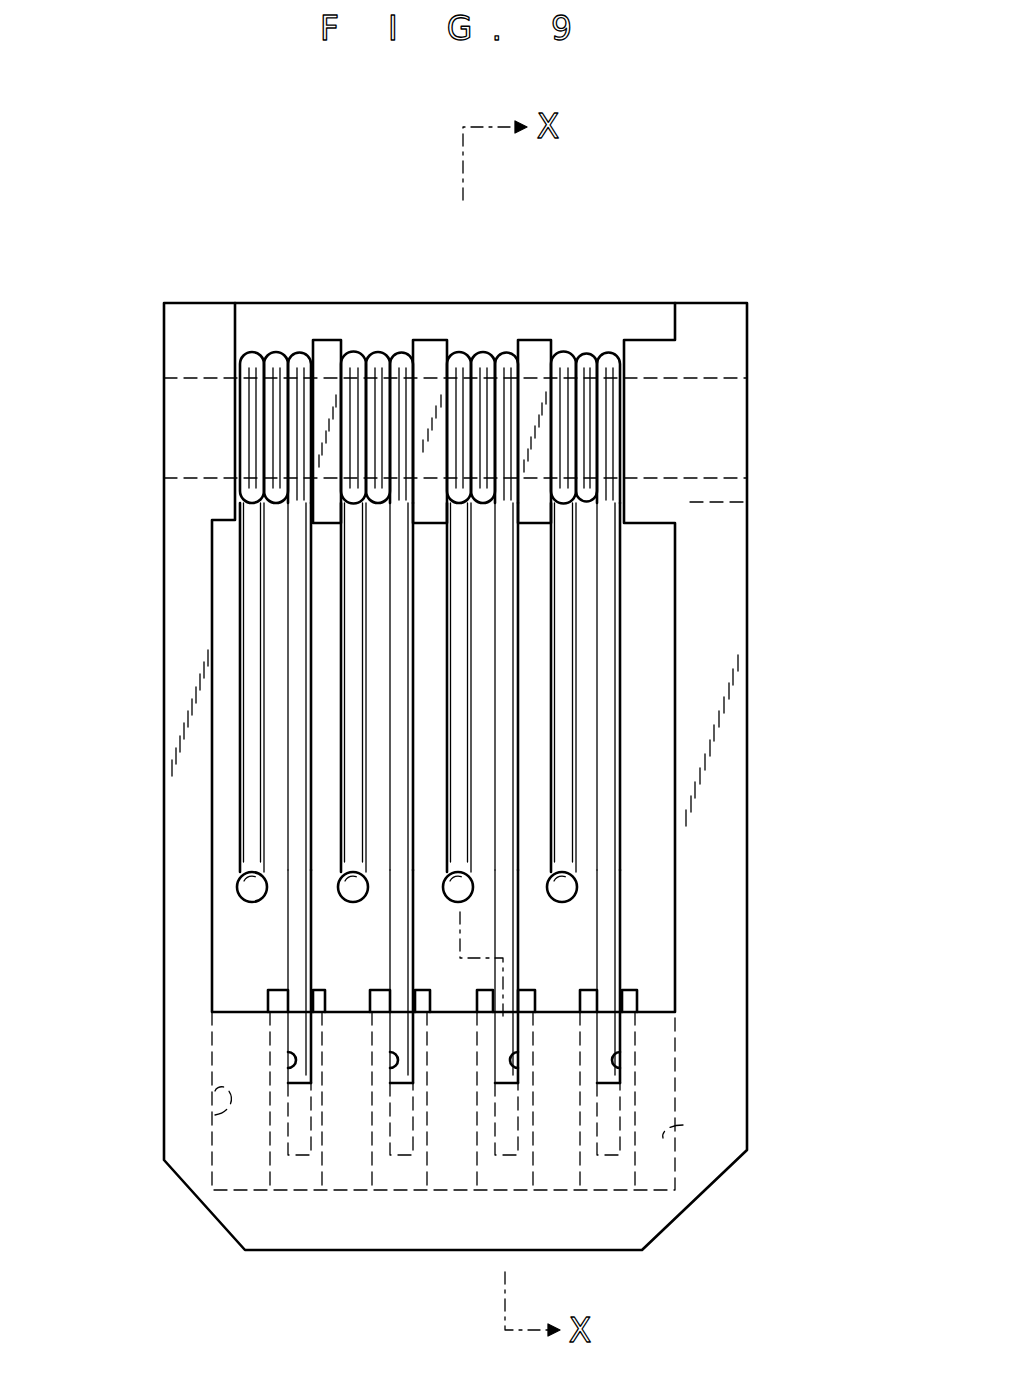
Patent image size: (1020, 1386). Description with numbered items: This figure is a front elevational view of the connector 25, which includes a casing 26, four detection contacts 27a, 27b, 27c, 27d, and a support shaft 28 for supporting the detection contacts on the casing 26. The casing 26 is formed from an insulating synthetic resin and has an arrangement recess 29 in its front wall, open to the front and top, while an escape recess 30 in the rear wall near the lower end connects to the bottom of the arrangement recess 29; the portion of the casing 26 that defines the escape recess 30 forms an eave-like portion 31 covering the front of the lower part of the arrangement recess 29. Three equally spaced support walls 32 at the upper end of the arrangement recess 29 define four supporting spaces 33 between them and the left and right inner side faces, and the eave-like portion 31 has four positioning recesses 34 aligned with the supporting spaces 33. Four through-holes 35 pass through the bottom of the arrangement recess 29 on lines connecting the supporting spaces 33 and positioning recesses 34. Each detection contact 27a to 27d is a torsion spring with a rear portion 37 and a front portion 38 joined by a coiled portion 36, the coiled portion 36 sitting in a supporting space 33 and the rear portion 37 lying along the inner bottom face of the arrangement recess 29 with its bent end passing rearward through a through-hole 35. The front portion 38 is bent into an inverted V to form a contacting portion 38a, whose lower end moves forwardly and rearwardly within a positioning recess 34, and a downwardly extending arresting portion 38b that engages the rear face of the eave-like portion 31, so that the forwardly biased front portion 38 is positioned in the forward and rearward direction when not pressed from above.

The connector 25 is at (730, 243).
The casing 26 is at (748, 689).
The detection contact 27a is at (290, 855).
The detection contact 27b is at (390, 818).
The detection contact 27c is at (522, 832).
The detection contact 27d is at (622, 845).
The support shaft 28 is at (690, 480).
The arrangement recess 29 is at (671, 541).
The escape recess 30 is at (215, 1115).
The eave-like portion 31 is at (235, 1042).
The support wall 32 is at (325, 350).
The supporting space 33 is at (350, 351).
The positioning recess 34 is at (290, 1075).
The through-hole 35 is at (247, 902).
The coiled portion 36 is at (378, 352).
The rear portion 37 is at (350, 600).
The front portion 38 is at (390, 967).
The contacting portion 38a is at (293, 915).
The arresting portion 38b is at (296, 1157).